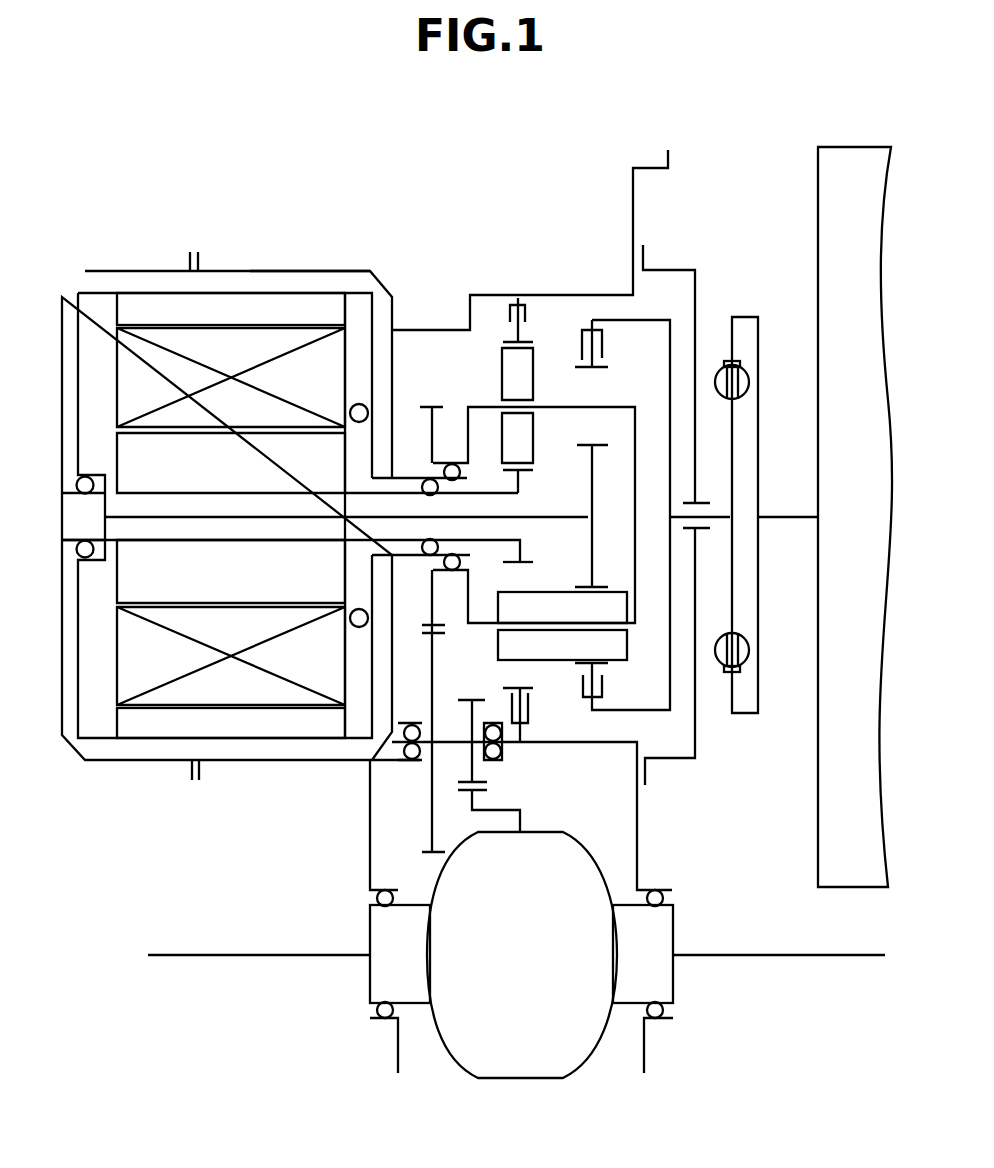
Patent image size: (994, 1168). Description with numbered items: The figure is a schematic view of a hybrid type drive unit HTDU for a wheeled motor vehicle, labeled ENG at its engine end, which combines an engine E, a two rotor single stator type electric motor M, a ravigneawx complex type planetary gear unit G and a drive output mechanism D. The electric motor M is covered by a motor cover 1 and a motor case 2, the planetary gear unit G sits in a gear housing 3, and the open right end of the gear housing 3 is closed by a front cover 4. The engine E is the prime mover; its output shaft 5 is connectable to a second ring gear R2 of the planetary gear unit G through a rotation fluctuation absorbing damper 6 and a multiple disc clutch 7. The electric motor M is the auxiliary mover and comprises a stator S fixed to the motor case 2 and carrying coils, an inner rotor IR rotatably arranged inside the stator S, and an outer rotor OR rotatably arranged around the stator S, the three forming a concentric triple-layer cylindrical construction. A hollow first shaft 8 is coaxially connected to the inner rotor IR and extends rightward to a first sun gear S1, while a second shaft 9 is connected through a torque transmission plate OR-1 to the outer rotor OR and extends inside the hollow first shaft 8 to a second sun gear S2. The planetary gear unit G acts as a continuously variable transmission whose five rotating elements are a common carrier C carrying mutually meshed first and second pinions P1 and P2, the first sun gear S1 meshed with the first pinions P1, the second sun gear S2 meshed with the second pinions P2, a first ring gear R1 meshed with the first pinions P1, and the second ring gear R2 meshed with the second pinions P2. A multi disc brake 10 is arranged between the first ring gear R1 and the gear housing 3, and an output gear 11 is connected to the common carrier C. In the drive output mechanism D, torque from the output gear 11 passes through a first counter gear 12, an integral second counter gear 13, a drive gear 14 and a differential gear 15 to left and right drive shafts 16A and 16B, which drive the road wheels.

The motor cover 1 is at (148, 270).
The motor case 2 is at (323, 270).
The gear housing 3 is at (590, 293).
The front cover 4 is at (700, 278).
The output shaft 5 is at (783, 517).
The rotation fluctuation absorbing damper 6 is at (722, 361).
The multiple disc clutch 7 is at (603, 343).
The first shaft 8 is at (443, 497).
The second shaft 9 is at (540, 512).
The multi disc brake 10 is at (505, 322).
The output gear 11 is at (423, 407).
The first counter gear 12 is at (428, 650).
The second counter gear 13 is at (463, 697).
The drive gear 14 is at (477, 793).
The differential gear 15 is at (540, 961).
The drive shaft 16A is at (253, 952).
The drive shaft 16B is at (763, 952).
The electric motor M is at (317, 463).
The outer rotor OR is at (248, 319).
The inner rotor IR is at (243, 478).
The stator S is at (157, 389).
The torque transmission plate OR-1 is at (76, 393).
The planetary gear unit G is at (544, 312).
The first ring gear R1 is at (502, 370).
The second ring gear R2 is at (600, 370).
The first pinion P1 is at (537, 378).
The second pinion P2 is at (540, 663).
The first sun gear S1 is at (522, 565).
The second sun gear S2 is at (573, 443).
The common carrier C is at (638, 578).
The drive output mechanism D is at (400, 818).
The engine E is at (828, 513).
The engine ENG is at (855, 518).
The hybrid type drive unit HTDU is at (773, 87).